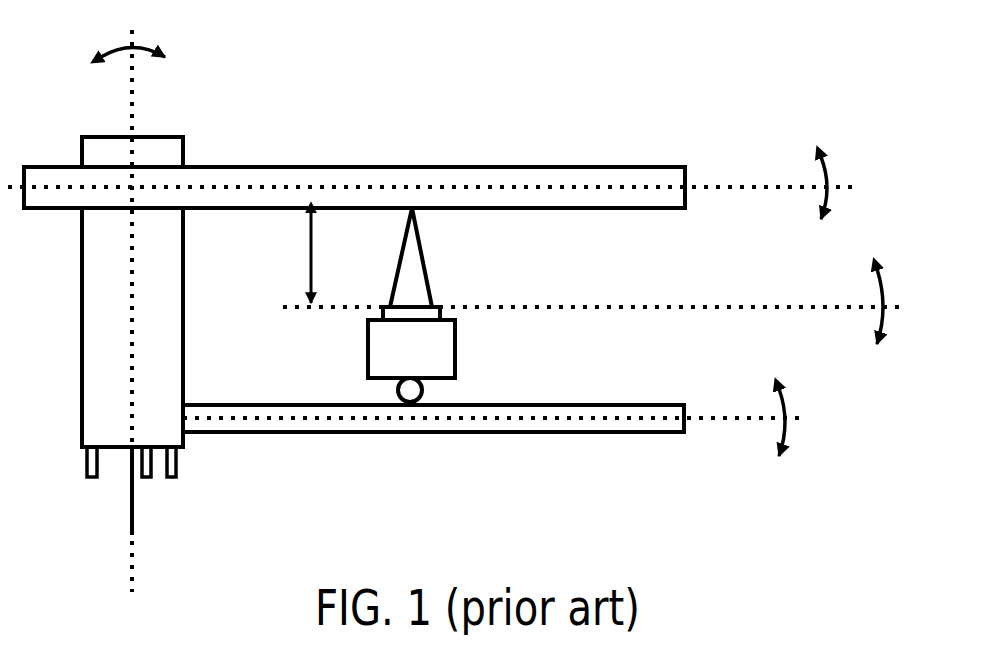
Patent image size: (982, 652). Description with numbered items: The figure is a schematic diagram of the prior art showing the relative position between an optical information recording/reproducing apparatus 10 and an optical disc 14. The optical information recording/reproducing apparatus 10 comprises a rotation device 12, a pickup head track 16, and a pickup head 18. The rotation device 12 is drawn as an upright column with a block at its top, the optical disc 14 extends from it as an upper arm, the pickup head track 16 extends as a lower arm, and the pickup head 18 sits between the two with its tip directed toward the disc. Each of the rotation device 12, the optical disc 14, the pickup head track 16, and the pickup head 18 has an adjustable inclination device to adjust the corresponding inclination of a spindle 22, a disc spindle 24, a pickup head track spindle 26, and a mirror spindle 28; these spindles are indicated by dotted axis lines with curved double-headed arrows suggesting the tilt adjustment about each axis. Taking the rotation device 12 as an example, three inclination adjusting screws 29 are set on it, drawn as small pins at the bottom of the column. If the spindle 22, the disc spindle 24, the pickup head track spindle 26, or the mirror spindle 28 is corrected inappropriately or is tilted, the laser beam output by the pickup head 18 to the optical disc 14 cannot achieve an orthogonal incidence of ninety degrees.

The optical information recording/reproducing apparatus 10 is at (425, 116).
The rotation device 12 is at (170, 152).
The optical disc 14 is at (555, 167).
The pickup head track 16 is at (568, 416).
The pickup head 18 is at (430, 307).
The spindle 22 is at (132, 535).
The disc spindle 24 is at (712, 187).
The pickup head track spindle 26 is at (728, 417).
The mirror spindle 28 is at (727, 307).
The inclination adjusting screws 29 is at (88, 473).